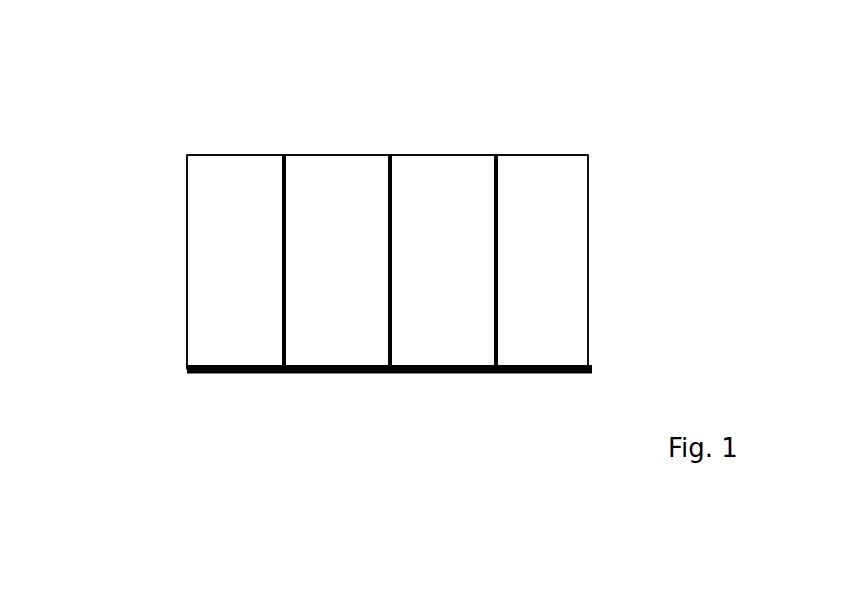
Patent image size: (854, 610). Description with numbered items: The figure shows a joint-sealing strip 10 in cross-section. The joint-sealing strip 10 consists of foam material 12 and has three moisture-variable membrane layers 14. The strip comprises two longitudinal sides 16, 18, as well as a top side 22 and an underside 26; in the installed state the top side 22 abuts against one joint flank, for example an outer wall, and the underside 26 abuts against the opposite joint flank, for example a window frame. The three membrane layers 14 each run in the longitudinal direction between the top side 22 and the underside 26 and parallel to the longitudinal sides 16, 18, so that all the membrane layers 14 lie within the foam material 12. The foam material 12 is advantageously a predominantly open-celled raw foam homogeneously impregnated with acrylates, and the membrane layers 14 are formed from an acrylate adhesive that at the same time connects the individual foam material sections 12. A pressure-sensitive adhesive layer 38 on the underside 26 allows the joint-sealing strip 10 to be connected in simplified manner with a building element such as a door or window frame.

The joint-sealing strip 10 is at (141, 88).
The foam material 12 is at (439, 205).
The moisture-variable membrane layers 14 is at (389, 192).
The longitudinal side 16 is at (176, 268).
The longitudinal side 18 is at (600, 257).
The top side 22 is at (405, 143).
The underside 26 is at (403, 386).
The pressure-sensitive adhesive layer 38 is at (313, 373).